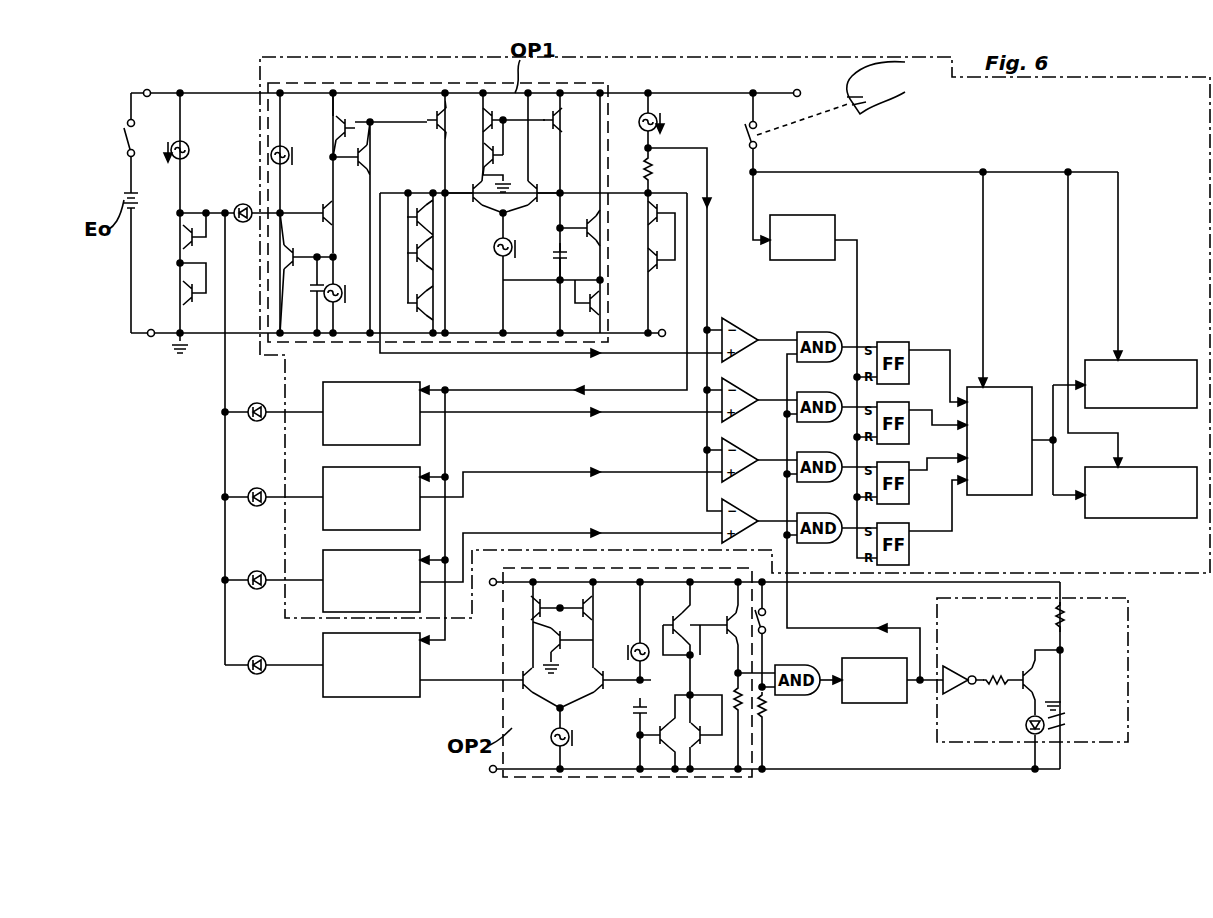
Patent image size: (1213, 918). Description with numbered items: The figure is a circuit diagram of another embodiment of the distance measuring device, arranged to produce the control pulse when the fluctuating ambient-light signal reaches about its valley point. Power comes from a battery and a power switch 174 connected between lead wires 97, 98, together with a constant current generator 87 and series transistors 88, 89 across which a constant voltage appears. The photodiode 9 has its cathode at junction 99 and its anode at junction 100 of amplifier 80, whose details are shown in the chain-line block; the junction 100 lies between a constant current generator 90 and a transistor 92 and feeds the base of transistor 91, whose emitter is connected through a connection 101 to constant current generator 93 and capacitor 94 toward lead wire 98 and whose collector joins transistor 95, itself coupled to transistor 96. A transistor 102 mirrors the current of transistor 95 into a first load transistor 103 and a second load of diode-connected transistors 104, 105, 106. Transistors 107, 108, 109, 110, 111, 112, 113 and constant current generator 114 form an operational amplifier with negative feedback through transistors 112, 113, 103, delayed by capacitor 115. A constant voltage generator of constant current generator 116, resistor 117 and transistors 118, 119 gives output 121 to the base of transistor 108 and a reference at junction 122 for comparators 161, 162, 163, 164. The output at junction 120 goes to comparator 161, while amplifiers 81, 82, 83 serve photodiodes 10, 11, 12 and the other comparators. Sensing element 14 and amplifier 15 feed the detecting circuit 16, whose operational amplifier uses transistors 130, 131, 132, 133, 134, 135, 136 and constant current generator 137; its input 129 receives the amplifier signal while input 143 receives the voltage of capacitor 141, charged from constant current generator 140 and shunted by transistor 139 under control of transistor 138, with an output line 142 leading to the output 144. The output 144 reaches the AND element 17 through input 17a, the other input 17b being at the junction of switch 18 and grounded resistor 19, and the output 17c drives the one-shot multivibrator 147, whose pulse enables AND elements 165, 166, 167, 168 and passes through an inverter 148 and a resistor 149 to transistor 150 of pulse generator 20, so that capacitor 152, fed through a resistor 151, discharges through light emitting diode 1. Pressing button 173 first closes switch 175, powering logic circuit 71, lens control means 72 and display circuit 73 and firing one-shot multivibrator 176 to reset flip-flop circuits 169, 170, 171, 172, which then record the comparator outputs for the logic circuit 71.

The light emitting diode 1 is at (1028, 735).
The photoresponsive sensing element 9 is at (243, 222).
The photoresponsive sensing element 10 is at (254, 403).
The photoresponsive sensing element 11 is at (254, 488).
The photoresponsive sensing element 12 is at (254, 571).
The photoresponsive sensing element 14 is at (258, 675).
The amplifier 15 is at (323, 690).
The detecting circuit 16 is at (580, 780).
The AND element 17 is at (810, 668).
The input of AND element 17a is at (768, 673).
The input of AND element 17b is at (770, 692).
The output of AND element 17c is at (842, 695).
The switch 18 is at (768, 618).
The grounded resistor 19 is at (766, 735).
The pulse generator 20 is at (1128, 648).
The logic circuit 71 is at (1004, 387).
The lens control means 72 is at (1148, 360).
The display circuit 73 is at (1148, 467).
The amplifier 80 is at (408, 83).
The amplifier 81 is at (323, 393).
The amplifier 82 is at (323, 478).
The amplifier 83 is at (323, 561).
The constant current generator 87 is at (190, 145).
The transistor 88 is at (183, 238).
The transistor 89 is at (183, 294).
The constant current generator 90 is at (282, 146).
The transistor 91 is at (333, 213).
The transistor 92 is at (306, 243).
The constant current generator 93 is at (340, 284).
The capacitor 94 is at (312, 290).
The transistor 95 is at (340, 125).
The transistor 96 is at (368, 157).
The lead wire 97 is at (236, 93).
The lead wire 98 is at (208, 333).
The junction 99 is at (184, 213).
The junction 100 is at (284, 212).
The connection line 101 is at (320, 256).
The transistor 102 is at (430, 120).
The transistor 103 is at (496, 216).
The transistor 104 is at (408, 212).
The transistor 105 is at (408, 252).
The transistor 106 is at (408, 302).
The transistor 107 is at (470, 200).
The transistor 108 is at (570, 232).
The transistor 109 is at (490, 122).
The transistor 110 is at (504, 164).
The transistor 111 is at (562, 122).
The transistor 112 is at (597, 225).
The transistor 113 is at (585, 308).
The constant current generator 114 is at (508, 253).
The capacitor 115 is at (566, 258).
The constant current generator 116 is at (662, 122).
The resistor 117 is at (652, 170).
The transistor 118 is at (650, 215).
The transistor 119 is at (650, 262).
The junction 120 is at (445, 193).
The output of constant voltage generator 121 is at (650, 193).
The junction 122 is at (652, 148).
The base of transistor 130 129 is at (484, 680).
The transistor 130 is at (512, 695).
The transistor 131 is at (592, 684).
The transistor 132 is at (537, 625).
The transistor 133 is at (563, 647).
The transistor 134 is at (594, 618).
The transistor 135 is at (682, 622).
The transistor 136 is at (732, 622).
The constant current generator 137 is at (552, 742).
The transistor 138 is at (712, 756).
The transistor 139 is at (668, 750).
The constant current generator 140 is at (659, 631).
The capacitor 141 is at (630, 730).
The output line 142 is at (734, 674).
The base of transistor 131 143 is at (642, 695).
The output of detecting circuit 144 is at (738, 685).
The one-shot multivibrator 147 is at (884, 703).
The inverter 148 is at (955, 696).
The resistor 149 is at (996, 676).
The transistor 150 is at (1026, 670).
The resistor 151 is at (1064, 620).
The capacitor 152 is at (1060, 703).
The comparator 161 is at (748, 330).
The comparator 162 is at (748, 396).
The comparator 163 is at (748, 455).
The comparator 164 is at (748, 515).
The AND element 165 is at (812, 332).
The AND element 166 is at (812, 392).
The AND element 167 is at (812, 452).
The AND element 168 is at (812, 513).
The R-S flip-flop circuit 169 is at (893, 342).
The R-S flip-flop circuit 170 is at (900, 402).
The R-S flip-flop circuit 171 is at (900, 462).
The R-S flip-flop circuit 172 is at (900, 523).
The double acting button 173 is at (870, 106).
The power switch 174 is at (126, 140).
The switch 175 is at (762, 141).
The one-shot multivibrator 176 is at (822, 215).